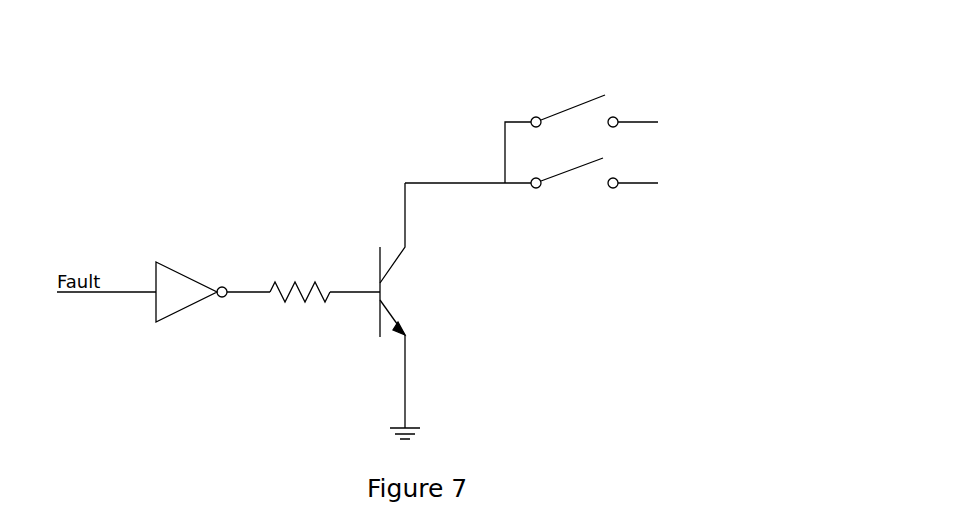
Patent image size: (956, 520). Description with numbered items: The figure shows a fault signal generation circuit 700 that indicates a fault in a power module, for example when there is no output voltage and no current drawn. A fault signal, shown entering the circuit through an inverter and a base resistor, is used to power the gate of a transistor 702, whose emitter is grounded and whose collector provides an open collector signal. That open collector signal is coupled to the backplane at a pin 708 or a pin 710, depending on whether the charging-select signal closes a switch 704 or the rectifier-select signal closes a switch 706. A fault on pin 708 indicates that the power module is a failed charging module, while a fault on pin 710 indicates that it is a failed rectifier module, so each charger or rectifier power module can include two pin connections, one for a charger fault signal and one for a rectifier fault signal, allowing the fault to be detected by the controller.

The fault signal generation circuit 700 is at (283, 245).
The transistor 702 is at (397, 298).
The switch 704 is at (610, 92).
The switch 706 is at (592, 185).
The pin 708 is at (668, 110).
The pin 710 is at (670, 185).